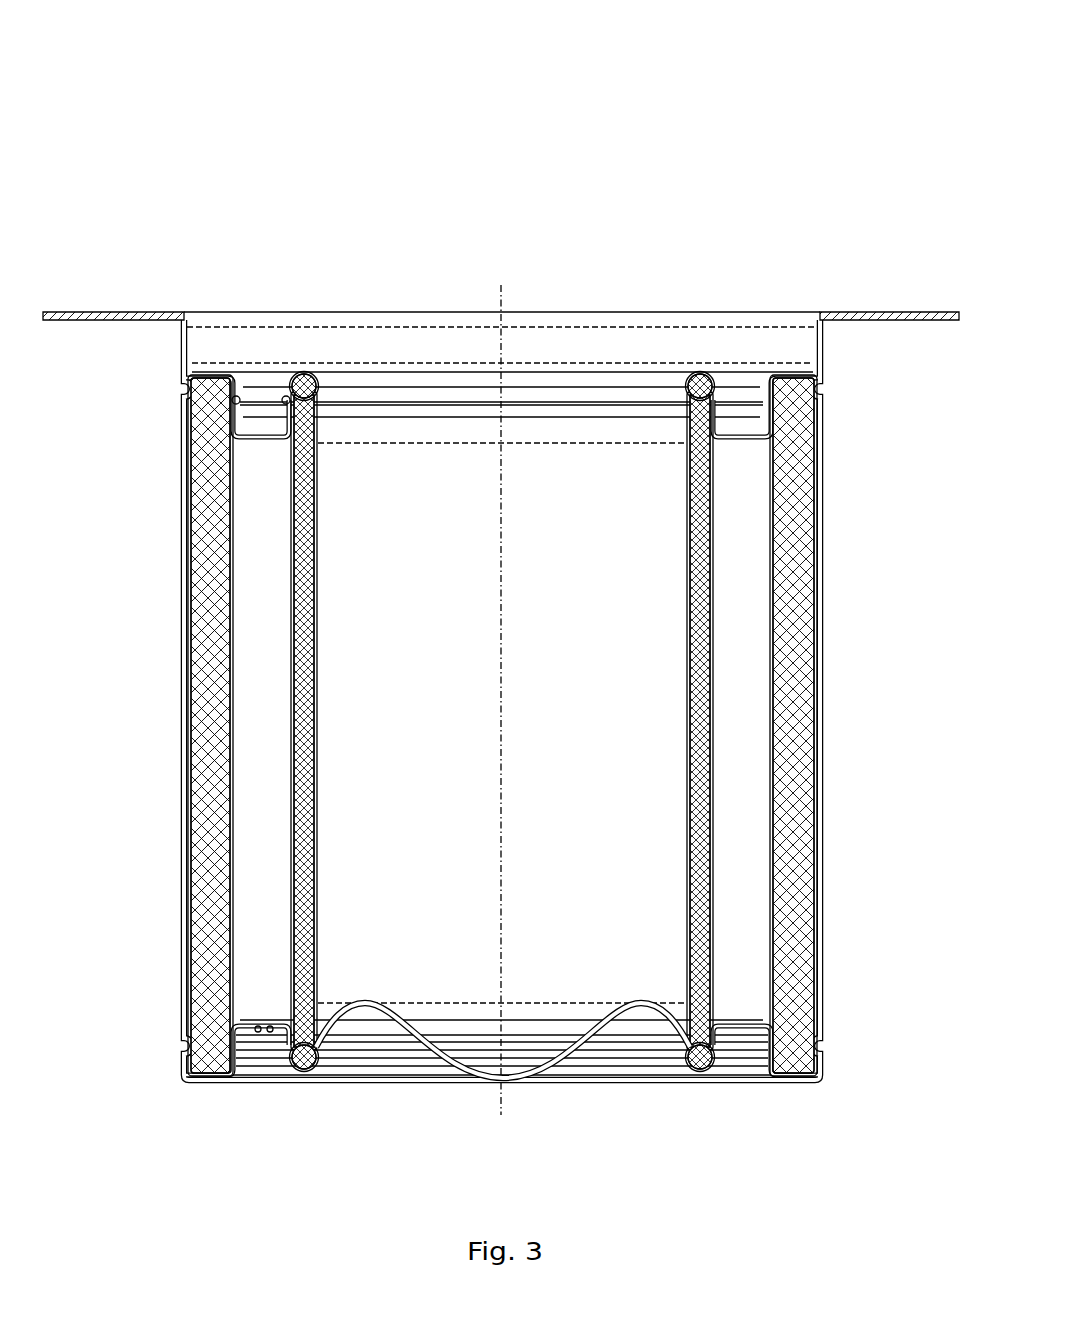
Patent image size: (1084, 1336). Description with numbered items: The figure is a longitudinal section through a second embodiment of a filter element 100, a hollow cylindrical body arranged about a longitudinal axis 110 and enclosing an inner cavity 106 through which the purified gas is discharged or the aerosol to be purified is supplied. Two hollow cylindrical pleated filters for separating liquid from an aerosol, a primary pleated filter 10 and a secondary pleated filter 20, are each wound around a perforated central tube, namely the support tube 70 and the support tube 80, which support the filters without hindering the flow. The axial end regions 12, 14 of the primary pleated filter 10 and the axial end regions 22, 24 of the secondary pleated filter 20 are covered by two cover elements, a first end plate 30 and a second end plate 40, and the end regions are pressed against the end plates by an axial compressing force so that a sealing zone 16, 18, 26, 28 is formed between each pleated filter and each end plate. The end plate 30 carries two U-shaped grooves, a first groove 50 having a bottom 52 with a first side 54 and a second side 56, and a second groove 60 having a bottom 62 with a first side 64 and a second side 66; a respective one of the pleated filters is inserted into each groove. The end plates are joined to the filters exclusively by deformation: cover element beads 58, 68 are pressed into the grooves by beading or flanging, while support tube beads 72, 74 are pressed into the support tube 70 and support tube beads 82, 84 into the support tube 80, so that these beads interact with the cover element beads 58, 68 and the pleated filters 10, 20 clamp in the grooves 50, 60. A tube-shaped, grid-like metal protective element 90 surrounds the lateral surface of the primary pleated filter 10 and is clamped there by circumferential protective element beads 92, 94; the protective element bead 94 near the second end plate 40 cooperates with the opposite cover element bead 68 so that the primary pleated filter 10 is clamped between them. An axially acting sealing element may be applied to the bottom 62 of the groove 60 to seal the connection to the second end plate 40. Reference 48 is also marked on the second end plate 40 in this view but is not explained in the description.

The primary pleated filter 10 is at (806, 596).
The axial end region 12 is at (798, 1083).
The axial end region 14 is at (790, 369).
The sealing zone 16 is at (828, 1045).
The sealing zone 18 is at (826, 390).
The secondary pleated filter 20 is at (690, 745).
The axial end region 22 is at (700, 1083).
The axial end region 24 is at (700, 364).
The sealing zone 26 is at (724, 1057).
The sealing zone 28 is at (718, 404).
The first end plate 30 is at (433, 1075).
The second end plate 40 is at (868, 312).
The flange 48 is at (118, 312).
The U-shaped groove 50 is at (803, 1042).
The bottom 52 is at (208, 1083).
The first side 54 is at (185, 1023).
The second side 56 is at (250, 1072).
The cover element bead 58 is at (272, 1026).
The U-shaped groove 60 is at (697, 402).
The bottom 62 is at (301, 371).
The first side 64 is at (315, 402).
The second side 66 is at (272, 420).
The cover element bead 68 is at (318, 398).
The support tube 70 is at (775, 674).
The support tube bead 72 is at (247, 1028).
The support tube bead 74 is at (240, 379).
The support tube 80 is at (688, 680).
The support tube bead 82 is at (318, 1040).
The support tube bead 84 is at (318, 405).
The protective element 90 is at (823, 549).
The protective element bead 92 is at (182, 1050).
The protective element bead 94 is at (185, 388).
The filter element 100 is at (794, 180).
The inner cavity 106 is at (556, 624).
The longitudinal axis 110 is at (501, 297).